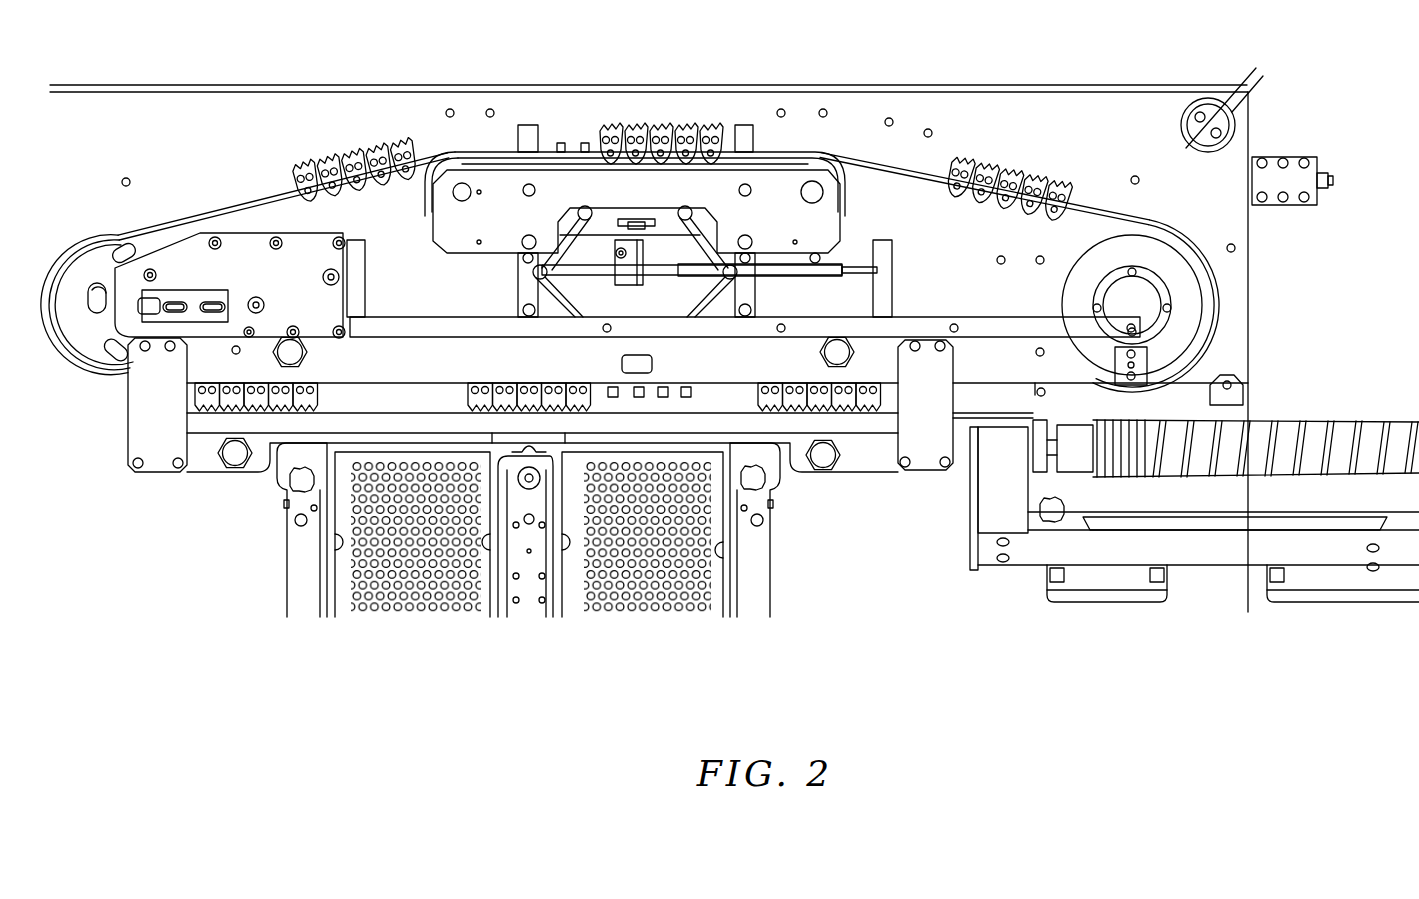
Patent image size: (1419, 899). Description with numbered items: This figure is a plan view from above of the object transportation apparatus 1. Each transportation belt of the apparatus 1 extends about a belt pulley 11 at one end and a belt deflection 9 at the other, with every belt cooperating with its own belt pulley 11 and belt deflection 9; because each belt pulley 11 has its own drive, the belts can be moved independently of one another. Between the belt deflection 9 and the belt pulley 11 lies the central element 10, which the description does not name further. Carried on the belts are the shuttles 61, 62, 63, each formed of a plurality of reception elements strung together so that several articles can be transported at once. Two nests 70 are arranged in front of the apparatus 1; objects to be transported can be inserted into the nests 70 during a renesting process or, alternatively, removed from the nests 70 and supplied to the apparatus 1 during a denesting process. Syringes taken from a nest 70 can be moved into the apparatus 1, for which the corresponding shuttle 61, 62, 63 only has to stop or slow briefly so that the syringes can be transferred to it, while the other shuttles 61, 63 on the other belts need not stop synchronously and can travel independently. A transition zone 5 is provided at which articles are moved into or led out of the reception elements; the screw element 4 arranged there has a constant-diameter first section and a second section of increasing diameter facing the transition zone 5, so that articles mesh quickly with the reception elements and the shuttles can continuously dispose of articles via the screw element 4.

The object transportation apparatus 1 is at (899, 148).
The screw element 4 is at (1323, 435).
The transition zone 5 is at (1108, 402).
The belt deflection 9 is at (103, 278).
The carrier plate 10 is at (786, 226).
The belt pulley 11 is at (1187, 300).
The shuttle 61 is at (1020, 173).
The shuttle 62 is at (661, 122).
The shuttle 63 is at (343, 150).
The nest 70 is at (340, 523).